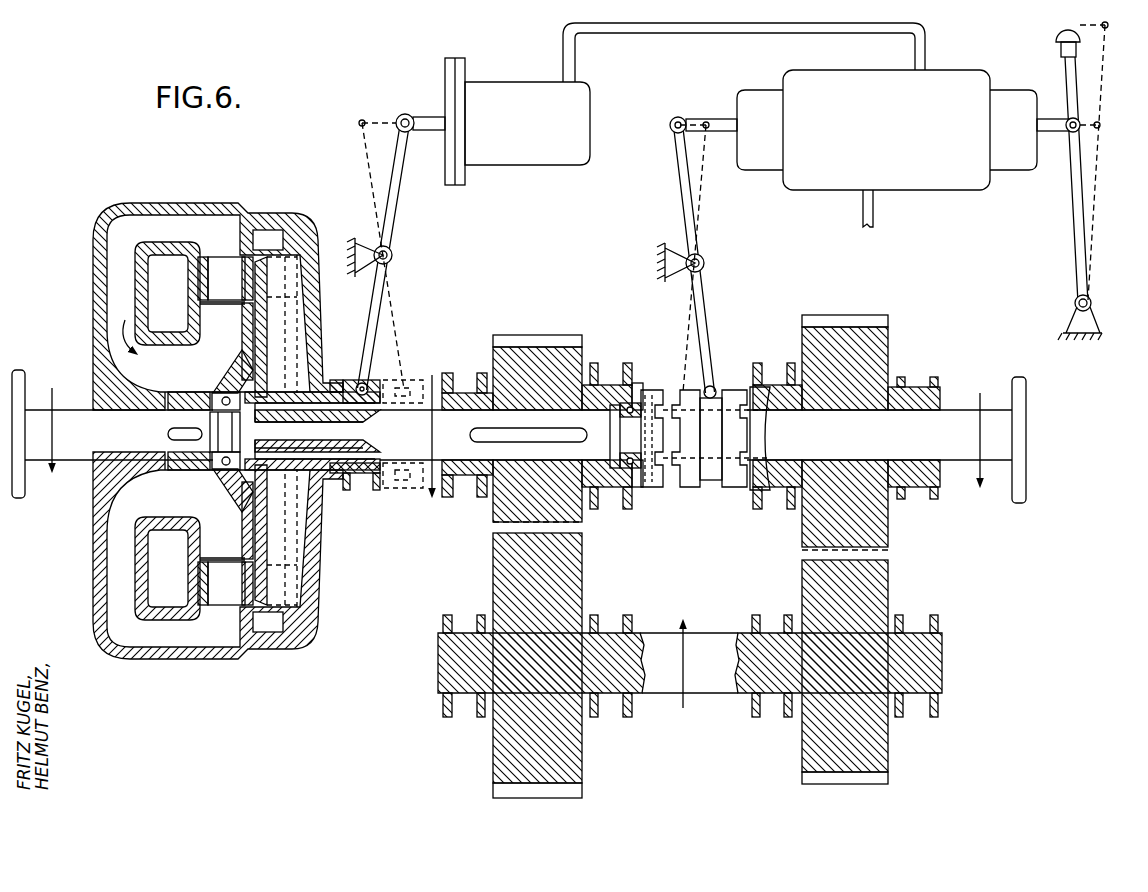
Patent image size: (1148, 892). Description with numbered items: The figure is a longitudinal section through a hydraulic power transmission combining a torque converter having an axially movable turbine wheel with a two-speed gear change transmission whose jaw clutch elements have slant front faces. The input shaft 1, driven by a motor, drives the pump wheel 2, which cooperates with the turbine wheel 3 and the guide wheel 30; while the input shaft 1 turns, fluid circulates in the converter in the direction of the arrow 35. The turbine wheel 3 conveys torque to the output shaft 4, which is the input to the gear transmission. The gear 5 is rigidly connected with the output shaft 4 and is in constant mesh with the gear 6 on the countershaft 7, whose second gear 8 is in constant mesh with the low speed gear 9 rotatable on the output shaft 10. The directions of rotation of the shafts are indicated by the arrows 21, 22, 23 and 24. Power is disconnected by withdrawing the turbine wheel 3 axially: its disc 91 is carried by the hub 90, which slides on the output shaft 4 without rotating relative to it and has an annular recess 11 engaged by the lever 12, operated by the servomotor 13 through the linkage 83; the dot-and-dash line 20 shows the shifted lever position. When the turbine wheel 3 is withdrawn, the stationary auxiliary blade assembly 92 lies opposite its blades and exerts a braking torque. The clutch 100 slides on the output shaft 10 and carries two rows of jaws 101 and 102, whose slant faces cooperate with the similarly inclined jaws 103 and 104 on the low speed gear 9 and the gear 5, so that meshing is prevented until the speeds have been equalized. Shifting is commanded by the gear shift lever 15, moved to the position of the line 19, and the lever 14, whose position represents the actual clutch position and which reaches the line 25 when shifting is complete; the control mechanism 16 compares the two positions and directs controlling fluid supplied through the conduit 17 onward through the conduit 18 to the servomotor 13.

The input shaft 1 is at (82, 441).
The pump wheel 2 is at (228, 347).
The turbine wheel 3 is at (232, 262).
The output shaft 4 is at (432, 435).
The gear 5 is at (543, 347).
The gear 6 is at (494, 583).
The countershaft 7 is at (707, 666).
The second gear 8 is at (880, 578).
The low speed gear 9 is at (852, 328).
The output shaft 10 is at (948, 445).
The annular recess 11 is at (366, 484).
The lever 12 is at (396, 192).
The servomotor 13 is at (526, 136).
The lever 14 is at (704, 246).
The gear shift lever 15 is at (1066, 67).
The control mechanism 16 is at (888, 136).
The conduit 17 is at (873, 215).
The conduit 18 is at (733, 48).
The dot-and-dash line 19 is at (1106, 88).
The dot-and-dash line 20 is at (362, 174).
The arrow 21 is at (51, 442).
The arrow 22 is at (431, 446).
The arrow 23 is at (684, 654).
The arrow 24 is at (981, 448).
The line 25 is at (703, 175).
The guide wheel 30 is at (112, 269).
The arrow 35 is at (134, 310).
The linkage 83 is at (426, 118).
The hub 90 is at (278, 398).
The disc 91 is at (268, 352).
The stationary auxiliary blade assembly 92 is at (276, 634).
The clutch 100 is at (714, 481).
The jaws 101 is at (737, 488).
The jaws 102 is at (684, 487).
The jaws 103 is at (764, 450).
The jaws 104 is at (653, 490).